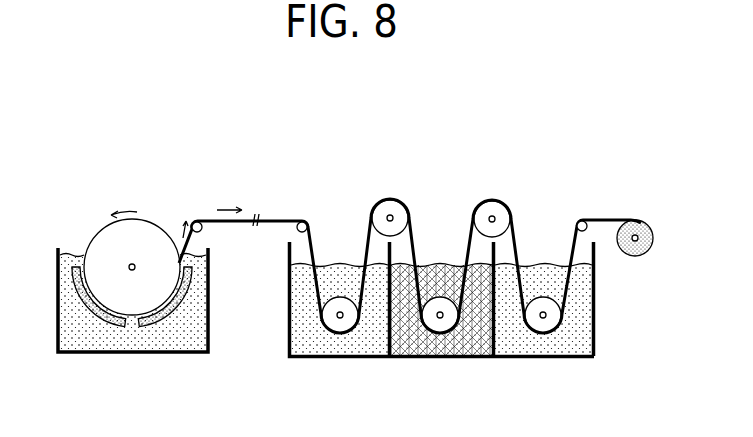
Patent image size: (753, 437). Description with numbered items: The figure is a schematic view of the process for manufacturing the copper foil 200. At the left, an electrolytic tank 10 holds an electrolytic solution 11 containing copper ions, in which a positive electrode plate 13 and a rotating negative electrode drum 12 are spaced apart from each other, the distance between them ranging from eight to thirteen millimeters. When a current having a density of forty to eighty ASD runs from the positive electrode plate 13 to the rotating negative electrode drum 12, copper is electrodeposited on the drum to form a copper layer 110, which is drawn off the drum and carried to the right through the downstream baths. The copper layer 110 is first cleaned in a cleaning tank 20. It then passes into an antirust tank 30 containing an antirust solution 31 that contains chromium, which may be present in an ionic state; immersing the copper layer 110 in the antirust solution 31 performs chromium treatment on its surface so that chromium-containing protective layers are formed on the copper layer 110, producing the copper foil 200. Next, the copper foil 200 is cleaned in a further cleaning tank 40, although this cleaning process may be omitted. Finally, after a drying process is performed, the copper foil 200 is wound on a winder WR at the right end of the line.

The electrolytic tank 10 is at (138, 348).
The electrolytic solution 11 is at (188, 342).
The rotating negative electrode drum 12 is at (96, 249).
The positive electrode plate 13 is at (108, 318).
The copper layer 110 is at (205, 216).
The cleaning tank 20 is at (336, 360).
The antirust tank 30 is at (441, 360).
The antirust solution 31 is at (478, 348).
The cleaning tank 40 is at (539, 360).
The copper foil 200 is at (594, 216).
The winder WR is at (641, 222).